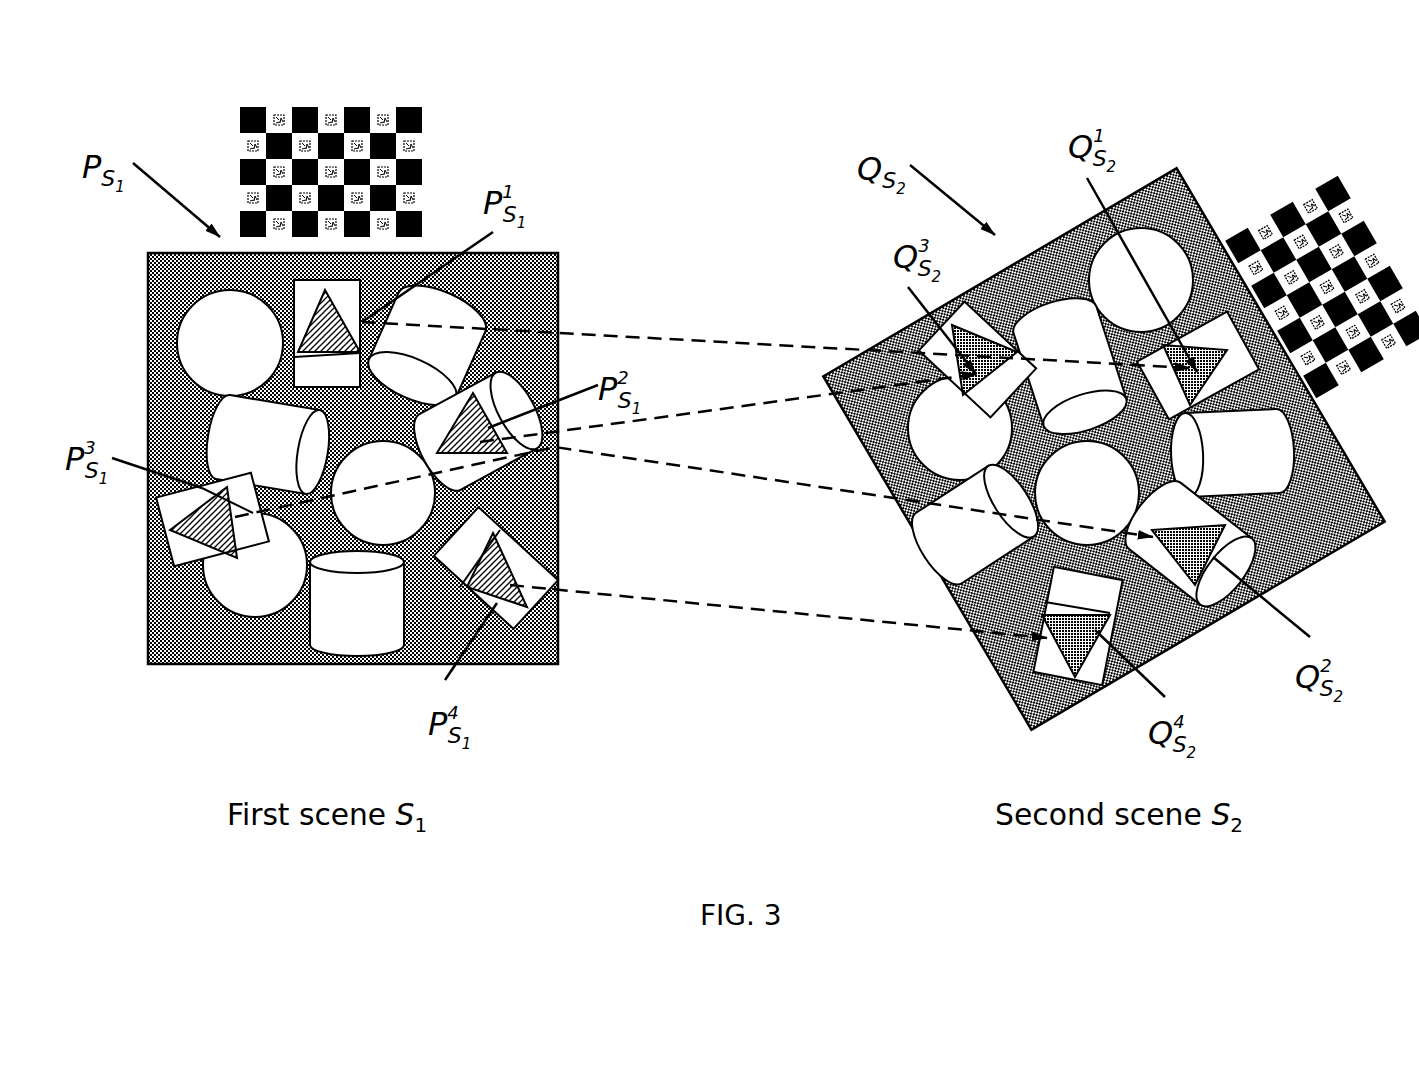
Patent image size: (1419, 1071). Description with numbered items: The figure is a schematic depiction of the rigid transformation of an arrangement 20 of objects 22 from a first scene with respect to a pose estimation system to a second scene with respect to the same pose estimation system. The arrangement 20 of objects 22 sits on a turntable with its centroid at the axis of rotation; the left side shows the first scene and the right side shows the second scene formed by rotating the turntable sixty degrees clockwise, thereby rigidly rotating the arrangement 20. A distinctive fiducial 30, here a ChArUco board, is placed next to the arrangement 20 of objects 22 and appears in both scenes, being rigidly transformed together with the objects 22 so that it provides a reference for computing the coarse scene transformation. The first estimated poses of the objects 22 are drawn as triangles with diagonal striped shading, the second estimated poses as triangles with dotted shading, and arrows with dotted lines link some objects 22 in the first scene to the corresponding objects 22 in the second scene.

The arrangement 20 is at (203, 160).
The objects 22 is at (220, 338).
The fiducial 30 is at (332, 97).